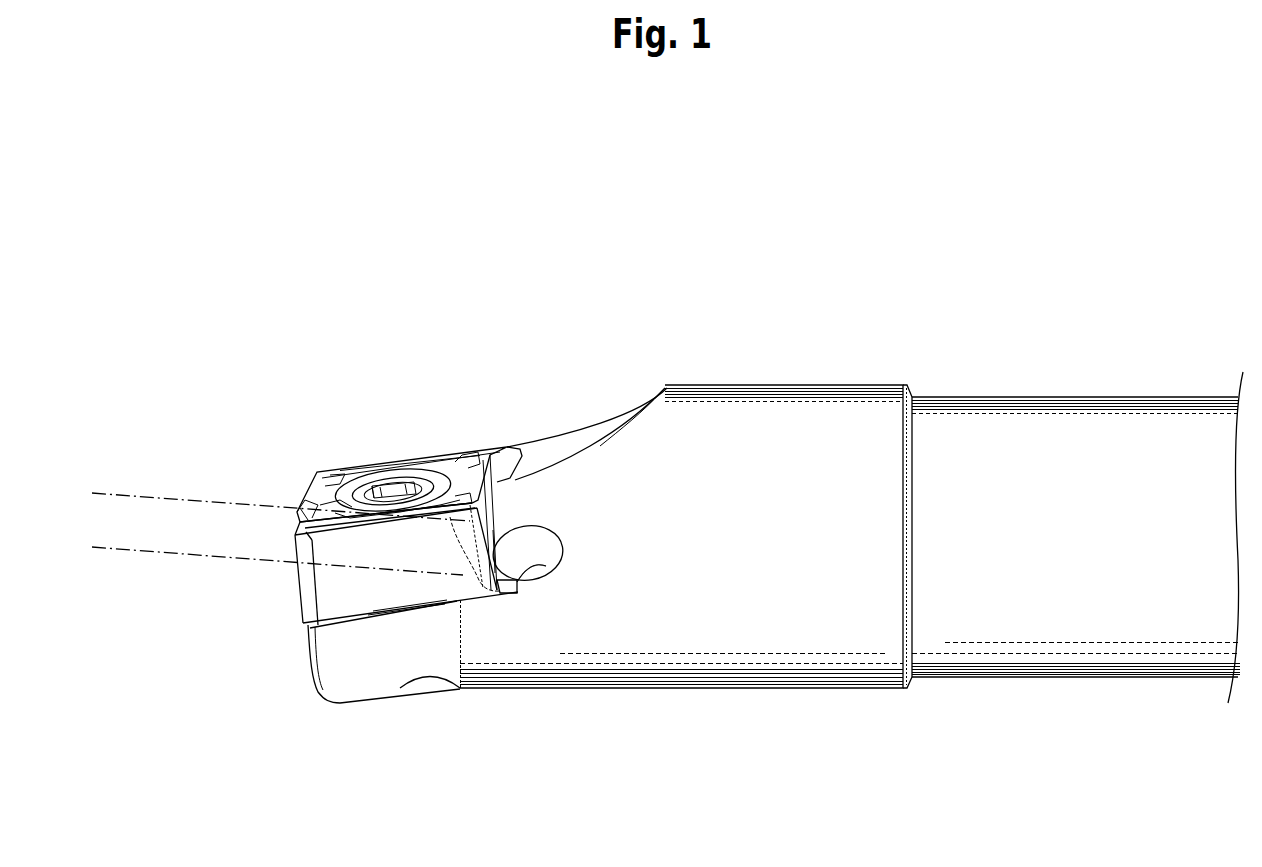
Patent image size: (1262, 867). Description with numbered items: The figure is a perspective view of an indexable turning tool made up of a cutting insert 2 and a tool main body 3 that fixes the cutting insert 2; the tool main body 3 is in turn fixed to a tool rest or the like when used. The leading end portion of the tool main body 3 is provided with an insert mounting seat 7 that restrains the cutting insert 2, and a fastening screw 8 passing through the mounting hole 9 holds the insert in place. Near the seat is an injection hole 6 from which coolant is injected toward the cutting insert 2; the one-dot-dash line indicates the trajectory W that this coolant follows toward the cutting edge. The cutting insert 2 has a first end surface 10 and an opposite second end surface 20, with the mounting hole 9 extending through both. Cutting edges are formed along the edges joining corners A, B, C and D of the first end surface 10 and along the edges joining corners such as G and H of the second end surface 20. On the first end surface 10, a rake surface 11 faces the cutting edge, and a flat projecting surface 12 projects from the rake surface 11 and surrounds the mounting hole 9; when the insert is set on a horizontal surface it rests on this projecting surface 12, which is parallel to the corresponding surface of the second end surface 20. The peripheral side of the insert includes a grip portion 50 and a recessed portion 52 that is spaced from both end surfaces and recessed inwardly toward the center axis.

The cutting insert 2 is at (298, 592).
The tool main body 3 is at (836, 689).
The injection hole 6 is at (545, 568).
The insert mounting seat 7 is at (507, 444).
The fastening screw 8 is at (392, 478).
The mounting hole 9 is at (362, 470).
The first end surface 10 is at (395, 284).
The rake surface 11 is at (432, 488).
The projecting surface 12 is at (438, 488).
The second end surface 20 is at (360, 620).
The grip portion 50 is at (494, 551).
The recessed portion 52 is at (505, 527).
The corner of first end surface A is at (295, 505).
The corner of first end surface B is at (478, 458).
The corner of first end surface C is at (490, 453).
The corner of first end surface D is at (297, 478).
The corner of second end surface G is at (302, 625).
The corner of second end surface H is at (497, 580).
The trajectory of coolant W is at (208, 558).